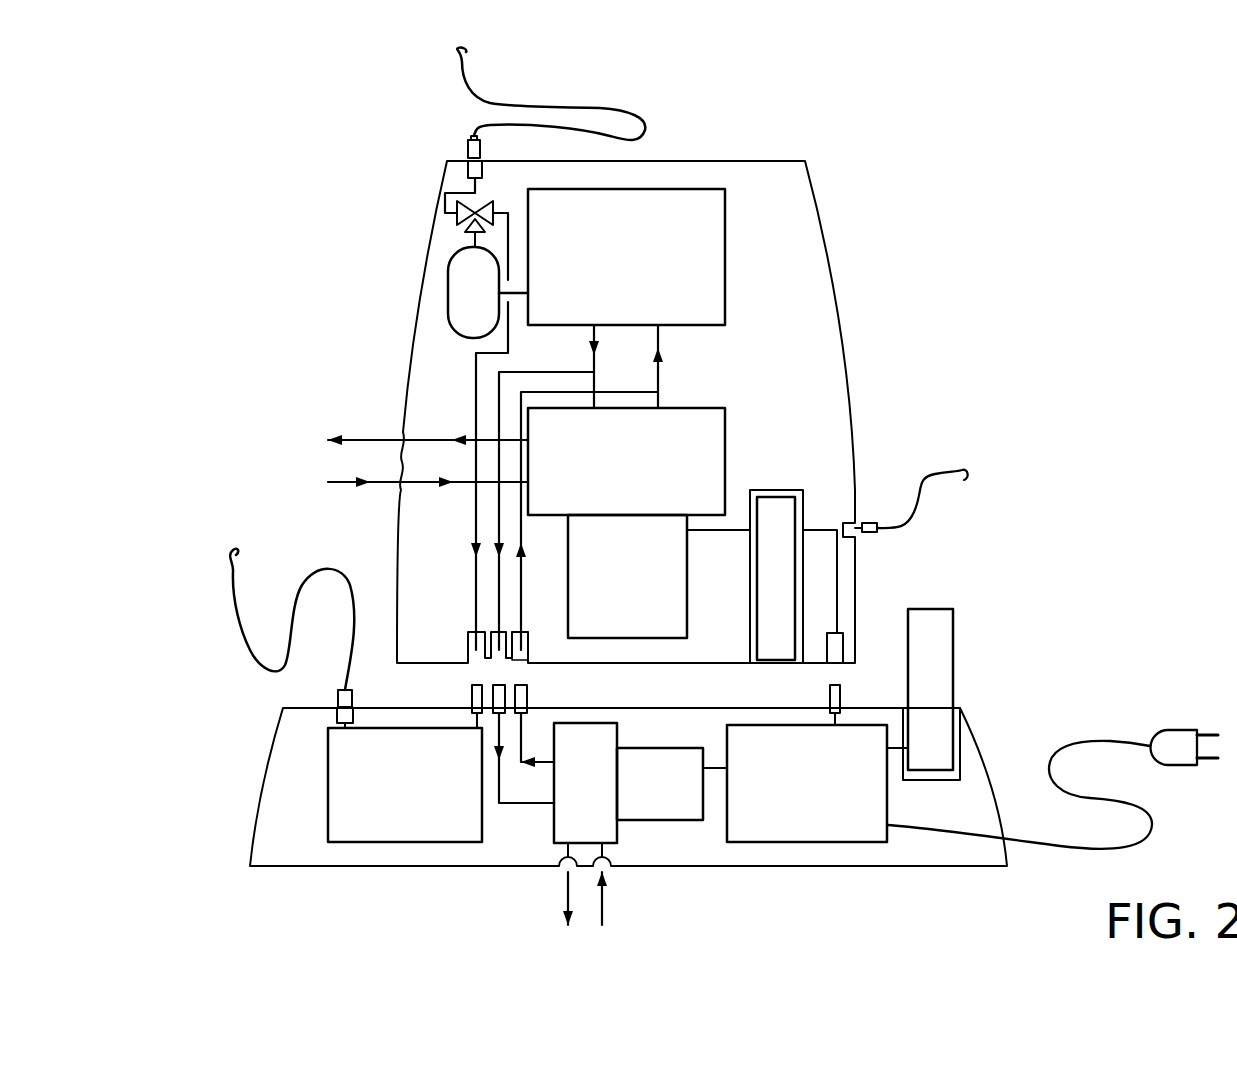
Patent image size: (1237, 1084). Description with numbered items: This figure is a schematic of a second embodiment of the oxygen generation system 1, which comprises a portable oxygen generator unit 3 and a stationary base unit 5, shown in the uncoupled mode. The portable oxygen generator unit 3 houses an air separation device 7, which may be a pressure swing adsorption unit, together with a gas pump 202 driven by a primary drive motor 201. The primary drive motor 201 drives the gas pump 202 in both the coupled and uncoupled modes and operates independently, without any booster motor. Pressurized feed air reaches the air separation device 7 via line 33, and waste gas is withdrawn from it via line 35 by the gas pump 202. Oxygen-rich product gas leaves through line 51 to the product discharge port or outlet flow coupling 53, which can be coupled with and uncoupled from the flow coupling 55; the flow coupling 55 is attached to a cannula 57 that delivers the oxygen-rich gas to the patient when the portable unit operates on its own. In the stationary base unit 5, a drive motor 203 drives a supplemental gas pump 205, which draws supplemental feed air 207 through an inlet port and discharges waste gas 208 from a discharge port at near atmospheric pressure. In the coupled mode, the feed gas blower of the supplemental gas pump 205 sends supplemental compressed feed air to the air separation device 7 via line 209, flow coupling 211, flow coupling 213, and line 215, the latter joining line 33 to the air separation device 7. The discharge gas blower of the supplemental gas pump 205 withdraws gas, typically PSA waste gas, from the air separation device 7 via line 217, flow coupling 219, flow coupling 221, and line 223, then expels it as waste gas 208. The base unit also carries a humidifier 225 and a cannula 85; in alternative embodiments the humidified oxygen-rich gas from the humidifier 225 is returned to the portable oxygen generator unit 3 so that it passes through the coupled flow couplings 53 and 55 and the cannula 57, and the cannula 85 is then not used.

The oxygen generation system 1 is at (1045, 276).
The portable oxygen generator unit 3 is at (880, 255).
The stationary base unit 5 is at (225, 765).
The air separation device 7 is at (637, 270).
The line 33 is at (660, 376).
The line 35 is at (592, 362).
The line 51 is at (457, 213).
The product discharge port or outlet flow coupling 53 is at (468, 168).
The flow coupling 55 is at (466, 148).
The cannula 57 is at (655, 120).
The cannula 85 is at (245, 620).
The primary drive motor 201 is at (646, 593).
The gas pump 202 is at (646, 477).
The drive motor 203 is at (682, 798).
The supplemental gas pump 205 is at (604, 798).
The supplemental feed air 207 is at (605, 903).
The waste gas 208 is at (563, 892).
The line 209 is at (523, 742).
The flow coupling 211 is at (534, 696).
The flow coupling 213 is at (527, 648).
The line 215 is at (525, 580).
The line 217 is at (499, 408).
The flow coupling 219 is at (497, 648).
The flow coupling 221 is at (497, 696).
The line 223 is at (543, 806).
The humidifier 225 is at (425, 795).